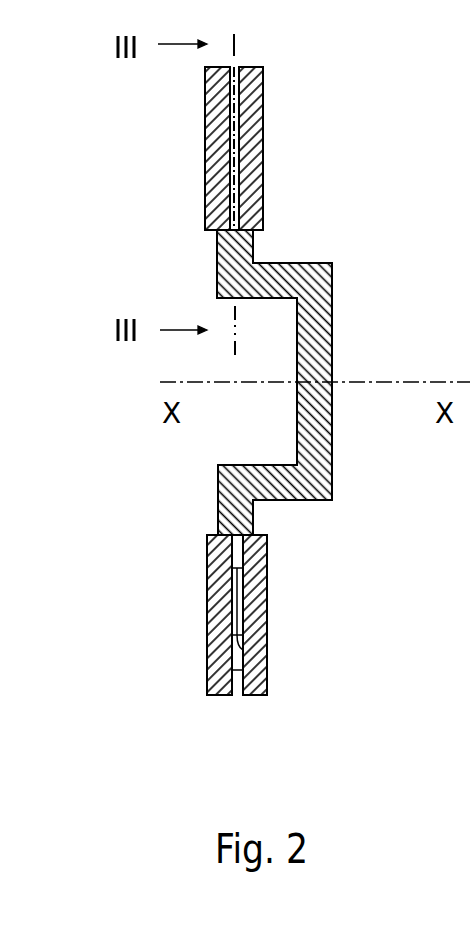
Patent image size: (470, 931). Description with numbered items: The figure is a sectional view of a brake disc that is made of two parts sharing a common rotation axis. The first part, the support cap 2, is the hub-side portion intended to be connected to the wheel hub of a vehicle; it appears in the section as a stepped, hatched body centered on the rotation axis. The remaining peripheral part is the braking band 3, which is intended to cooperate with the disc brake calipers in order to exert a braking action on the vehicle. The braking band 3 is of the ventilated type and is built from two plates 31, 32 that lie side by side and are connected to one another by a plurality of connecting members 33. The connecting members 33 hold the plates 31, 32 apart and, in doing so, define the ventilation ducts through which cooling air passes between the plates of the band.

The support cap 2 is at (312, 256).
The braking band 3 is at (253, 652).
The plate 31 is at (240, 148).
The plate 32 is at (207, 153).
The connecting member 33 is at (265, 650).